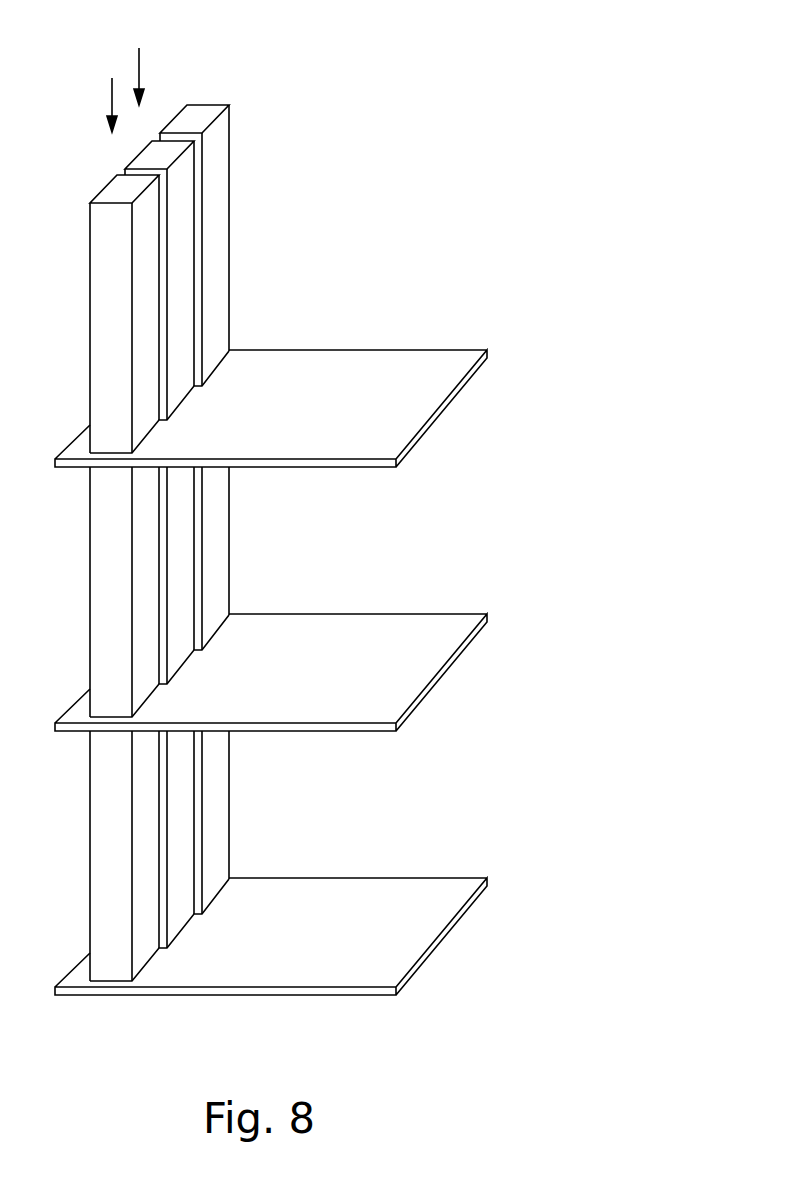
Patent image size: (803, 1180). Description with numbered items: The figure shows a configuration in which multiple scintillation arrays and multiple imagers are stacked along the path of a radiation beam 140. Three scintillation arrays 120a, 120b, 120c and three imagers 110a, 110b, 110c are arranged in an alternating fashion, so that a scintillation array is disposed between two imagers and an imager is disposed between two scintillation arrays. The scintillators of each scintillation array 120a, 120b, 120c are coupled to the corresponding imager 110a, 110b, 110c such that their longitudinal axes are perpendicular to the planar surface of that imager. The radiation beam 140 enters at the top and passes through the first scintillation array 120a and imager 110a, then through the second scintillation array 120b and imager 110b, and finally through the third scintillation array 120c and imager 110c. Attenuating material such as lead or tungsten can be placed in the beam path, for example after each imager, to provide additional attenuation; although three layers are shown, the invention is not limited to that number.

The radiation beam 140 is at (82, 36).
The scintillation array 120a is at (262, 165).
The scintillation array 120b is at (262, 557).
The scintillation array 120c is at (255, 822).
The imager 110a is at (335, 396).
The imager 110b is at (335, 658).
The imager 110c is at (335, 926).